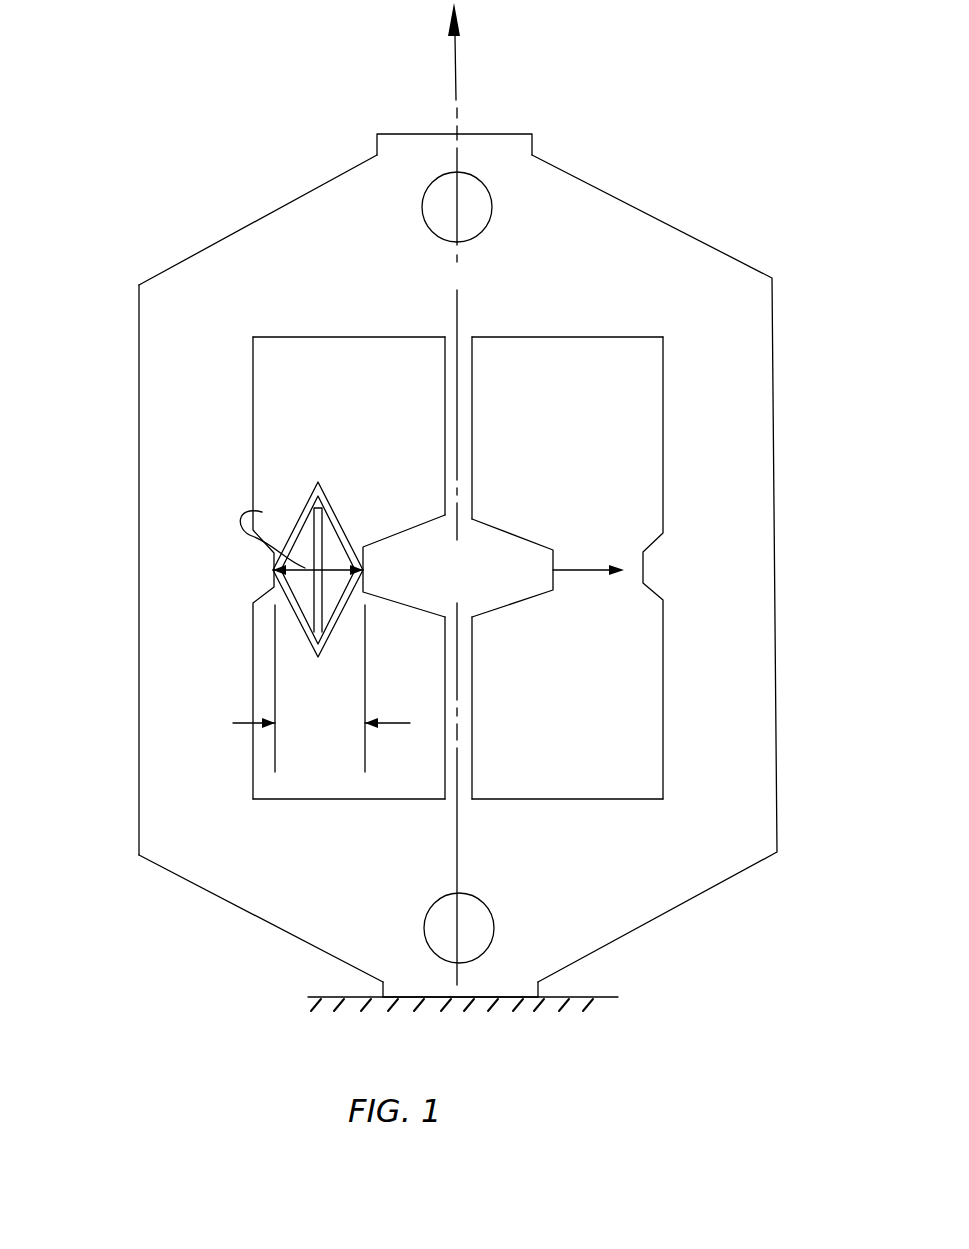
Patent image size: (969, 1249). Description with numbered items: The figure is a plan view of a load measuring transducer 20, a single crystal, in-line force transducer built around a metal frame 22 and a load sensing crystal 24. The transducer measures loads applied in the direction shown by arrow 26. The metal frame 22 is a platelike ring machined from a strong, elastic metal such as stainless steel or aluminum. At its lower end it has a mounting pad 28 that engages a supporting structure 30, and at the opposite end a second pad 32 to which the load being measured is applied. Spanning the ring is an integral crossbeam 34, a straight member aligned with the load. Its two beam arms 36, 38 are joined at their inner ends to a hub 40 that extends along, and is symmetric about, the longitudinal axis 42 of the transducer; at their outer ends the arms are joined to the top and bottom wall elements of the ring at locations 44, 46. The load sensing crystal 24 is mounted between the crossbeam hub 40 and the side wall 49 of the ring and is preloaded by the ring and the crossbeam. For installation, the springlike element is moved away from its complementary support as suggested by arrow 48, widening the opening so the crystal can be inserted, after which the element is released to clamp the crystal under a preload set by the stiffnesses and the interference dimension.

The load measuring transducer 20 is at (130, 56).
The metal frame 22 is at (178, 240).
The load sensing crystal 24 is at (316, 476).
The arrow 26 is at (457, 52).
The mounting pad 28 is at (383, 993).
The supporting structure 30 is at (608, 997).
The second pad 32 is at (512, 133).
The crossbeam 34 is at (472, 660).
The beam arm 36 is at (472, 395).
The beam arm 38 is at (473, 752).
The hub 40 is at (469, 584).
The longitudinal axis 42 is at (458, 303).
The location 44 is at (465, 333).
The location 46 is at (466, 804).
The arrow 48 is at (577, 569).
The side wall 49 is at (139, 565).